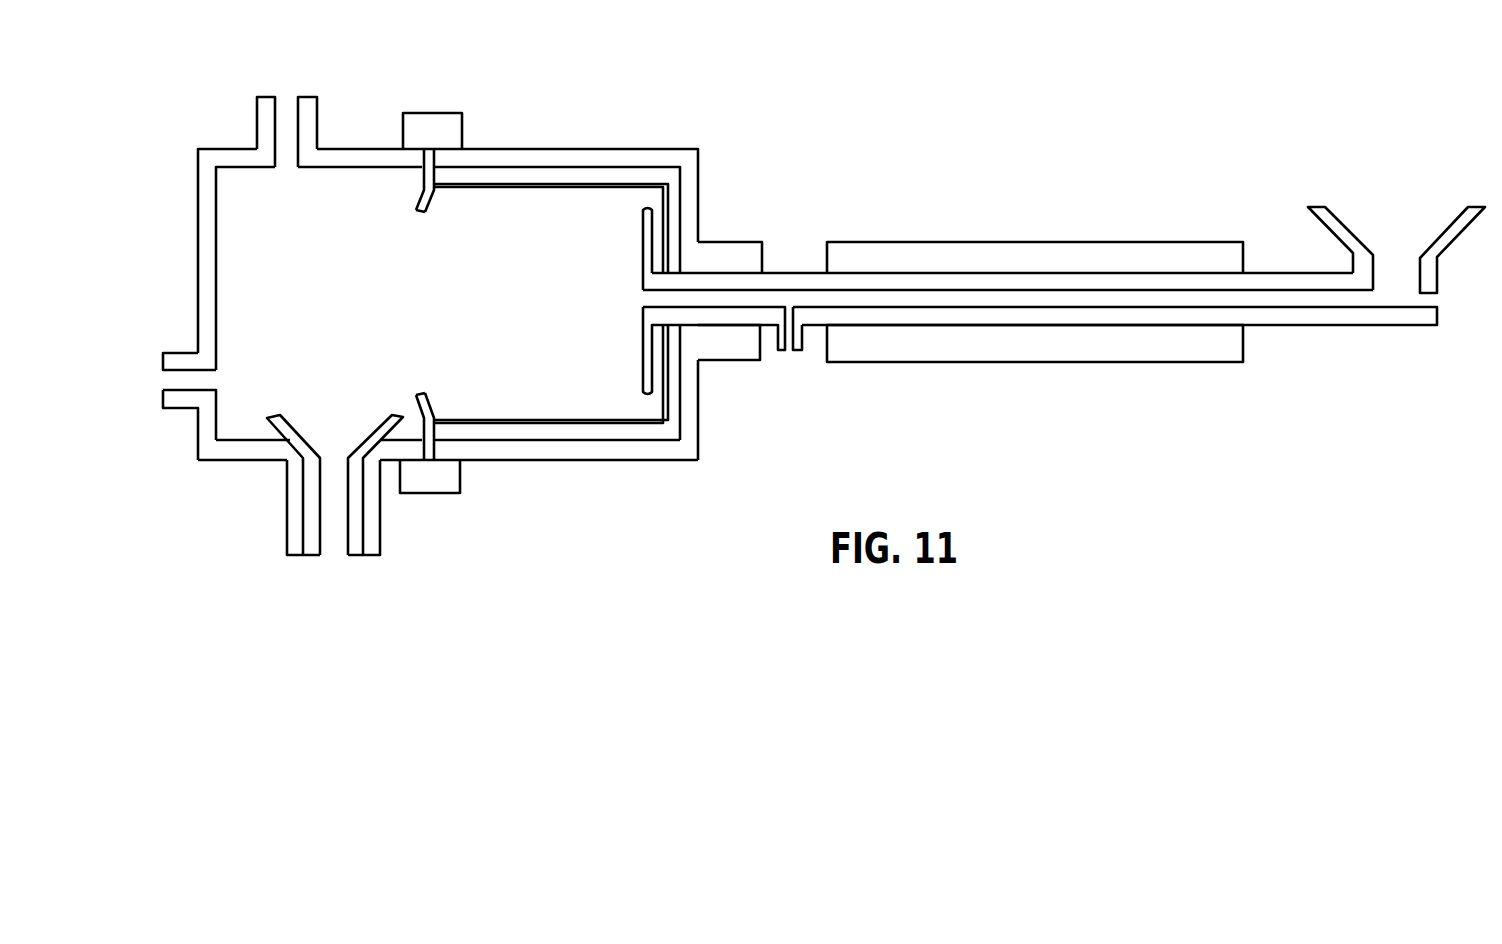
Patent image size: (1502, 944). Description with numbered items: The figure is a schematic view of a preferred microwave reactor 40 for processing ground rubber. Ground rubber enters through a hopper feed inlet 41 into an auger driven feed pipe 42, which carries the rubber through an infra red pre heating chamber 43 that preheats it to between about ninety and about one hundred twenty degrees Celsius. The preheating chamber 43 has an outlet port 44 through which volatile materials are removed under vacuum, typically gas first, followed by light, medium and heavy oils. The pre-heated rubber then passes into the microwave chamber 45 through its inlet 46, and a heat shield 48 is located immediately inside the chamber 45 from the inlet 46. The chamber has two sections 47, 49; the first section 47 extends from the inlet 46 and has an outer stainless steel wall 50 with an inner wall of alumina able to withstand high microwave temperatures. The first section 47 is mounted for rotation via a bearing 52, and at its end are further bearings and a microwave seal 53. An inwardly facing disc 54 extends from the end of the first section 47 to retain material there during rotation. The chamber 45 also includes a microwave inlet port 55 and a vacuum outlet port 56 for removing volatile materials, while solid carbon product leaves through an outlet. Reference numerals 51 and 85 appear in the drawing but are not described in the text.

The microwave reactor 40 is at (1024, 255).
The hopper feed inlet 41 is at (1372, 222).
The auger driven feed pipe 42 is at (1262, 302).
The infra red pre heating chamber 43 is at (1057, 343).
The outlet port 44 is at (787, 352).
The microwave chamber 45 is at (495, 223).
The inlet 46 is at (643, 297).
The first section 47 is at (497, 420).
The heat shield 48 is at (642, 380).
The second section 49 is at (232, 130).
The outer stainless steel wall 50 is at (588, 143).
The housing bottom wall 51 is at (527, 432).
The bearing 52 is at (728, 252).
The microwave seal 53 is at (435, 112).
The inwardly facing disc 54 is at (417, 212).
The microwave inlet port 55 is at (287, 105).
The vacuum outlet port 56 is at (195, 375).
The outlet tubes 85 is at (335, 550).